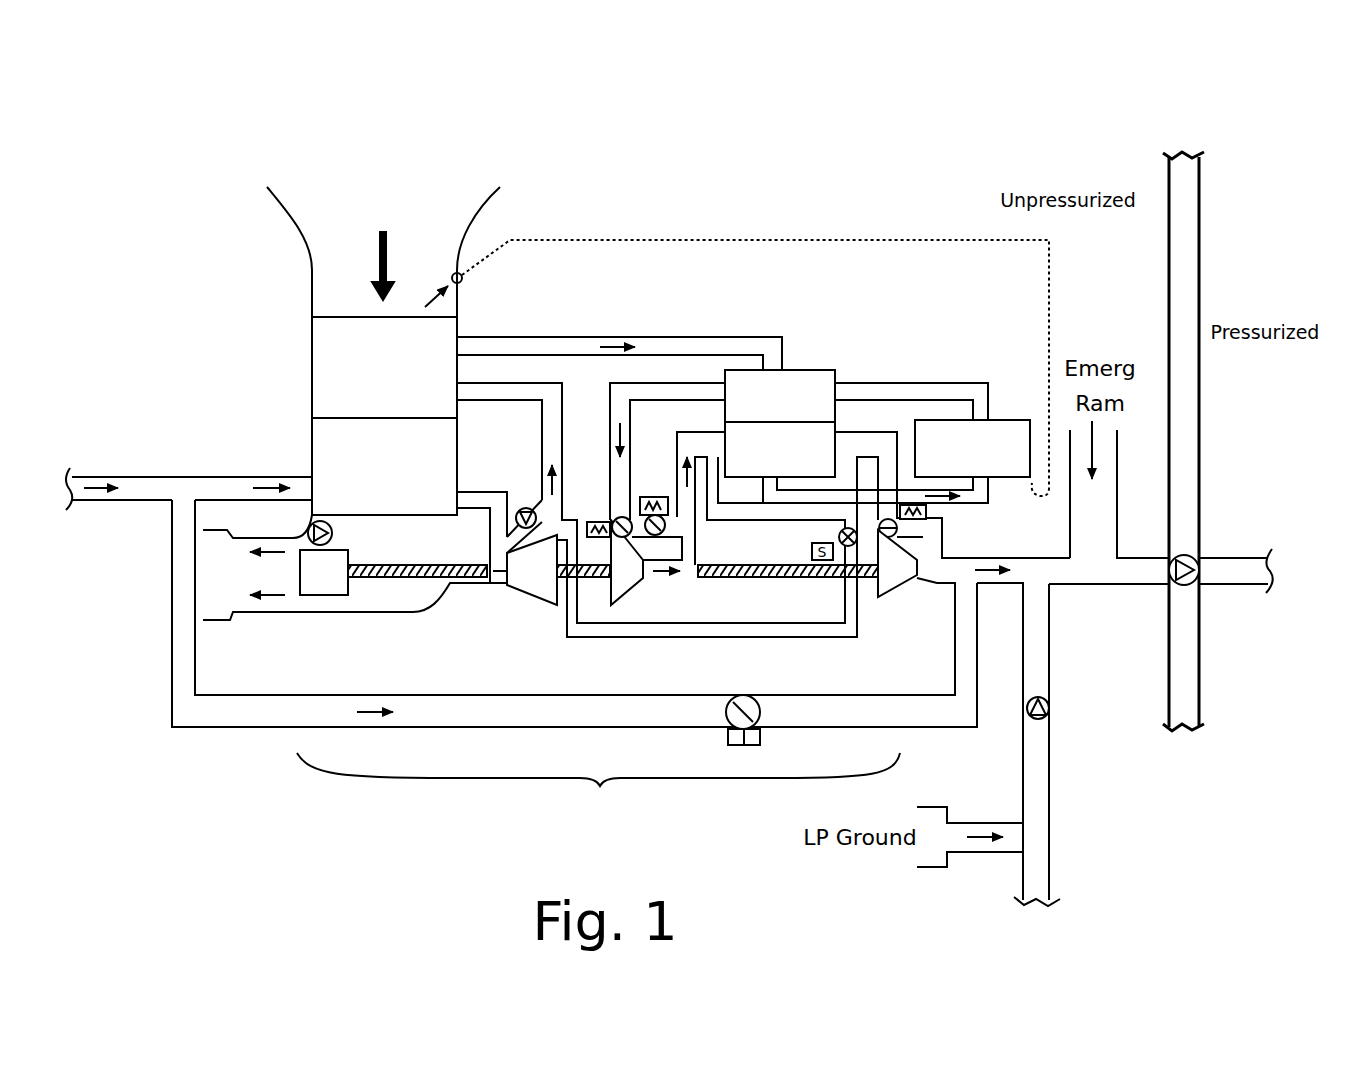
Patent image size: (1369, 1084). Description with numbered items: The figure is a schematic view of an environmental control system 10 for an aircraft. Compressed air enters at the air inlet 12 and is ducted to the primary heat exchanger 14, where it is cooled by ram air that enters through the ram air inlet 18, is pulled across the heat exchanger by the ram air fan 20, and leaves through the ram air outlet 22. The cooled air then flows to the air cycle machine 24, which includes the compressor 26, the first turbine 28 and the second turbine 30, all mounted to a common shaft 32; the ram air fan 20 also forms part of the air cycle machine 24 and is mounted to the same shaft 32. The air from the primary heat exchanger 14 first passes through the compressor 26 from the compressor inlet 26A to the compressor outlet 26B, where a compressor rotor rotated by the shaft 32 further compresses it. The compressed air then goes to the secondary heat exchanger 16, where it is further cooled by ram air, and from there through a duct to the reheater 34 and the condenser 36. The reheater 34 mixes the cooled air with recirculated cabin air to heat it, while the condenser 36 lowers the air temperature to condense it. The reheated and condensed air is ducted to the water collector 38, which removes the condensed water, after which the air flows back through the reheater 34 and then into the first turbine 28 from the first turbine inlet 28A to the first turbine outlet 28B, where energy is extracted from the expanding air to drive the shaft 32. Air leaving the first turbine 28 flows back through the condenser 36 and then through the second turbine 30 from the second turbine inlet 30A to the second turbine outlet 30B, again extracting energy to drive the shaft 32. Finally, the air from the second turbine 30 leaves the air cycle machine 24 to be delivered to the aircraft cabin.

The environmental control system 10 is at (196, 136).
The air inlet 12 is at (130, 477).
The primary heat exchanger 14 is at (328, 450).
The secondary heat exchanger 16 is at (328, 360).
The ram air inlet 18 is at (335, 266).
The ram air fan 20 is at (327, 595).
The ram air outlet 22 is at (227, 603).
The air cycle machine 24 is at (598, 791).
The compressor 26 is at (550, 597).
The compressor inlet 26A is at (507, 560).
The compressor outlet 26B is at (549, 535).
The first turbine 28 is at (622, 583).
The first turbine inlet 28A is at (630, 543).
The first turbine outlet 28B is at (630, 548).
The second turbine 30 is at (880, 597).
The second turbine inlet 30A is at (900, 541).
The second turbine outlet 30B is at (920, 573).
The shaft 32 is at (397, 578).
The reheater 34 is at (806, 370).
The condenser 36 is at (835, 457).
The water collector 38 is at (1013, 433).